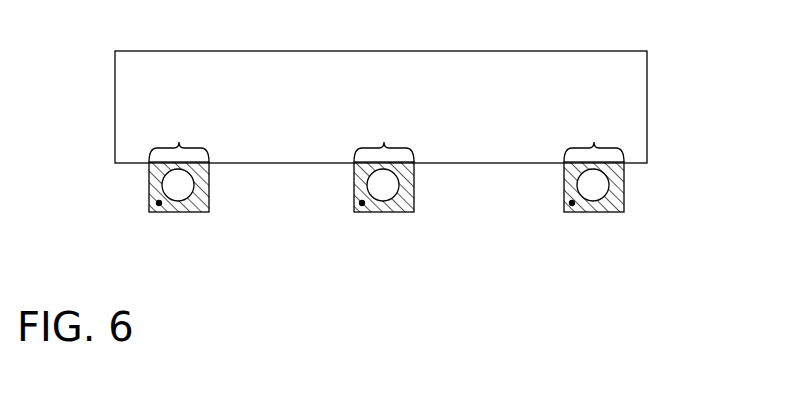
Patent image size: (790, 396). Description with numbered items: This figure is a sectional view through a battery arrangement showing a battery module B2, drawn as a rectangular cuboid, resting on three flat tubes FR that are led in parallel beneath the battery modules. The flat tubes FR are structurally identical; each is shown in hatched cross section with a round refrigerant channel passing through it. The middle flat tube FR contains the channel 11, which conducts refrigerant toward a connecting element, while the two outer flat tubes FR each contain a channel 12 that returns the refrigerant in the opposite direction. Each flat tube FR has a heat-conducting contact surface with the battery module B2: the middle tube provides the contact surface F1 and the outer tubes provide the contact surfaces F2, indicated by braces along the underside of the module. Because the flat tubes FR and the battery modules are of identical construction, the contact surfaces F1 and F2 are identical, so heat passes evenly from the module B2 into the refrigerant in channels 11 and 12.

The battery module B2 is at (647, 91).
The heat-conducting contact surface F1 is at (384, 133).
The heat-conducting contact surface F2 is at (179, 133).
The channel 11 is at (391, 202).
The channel 12 is at (187, 201).
The flat tube FR is at (159, 203).